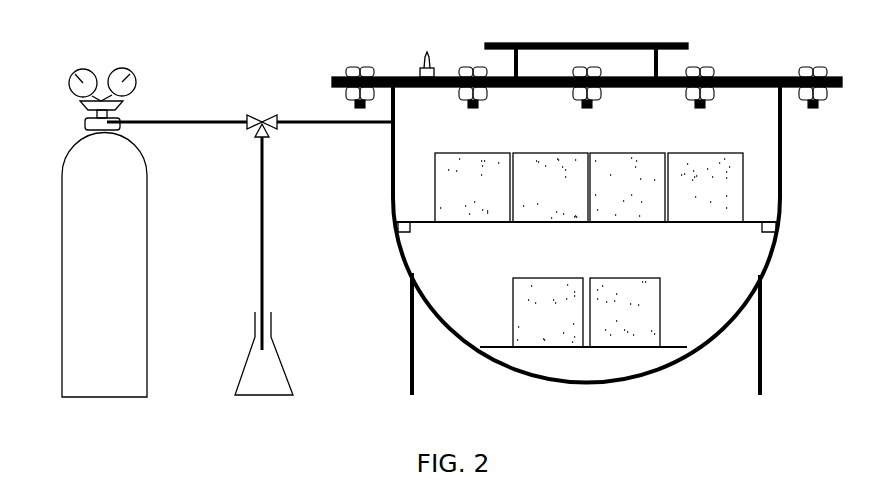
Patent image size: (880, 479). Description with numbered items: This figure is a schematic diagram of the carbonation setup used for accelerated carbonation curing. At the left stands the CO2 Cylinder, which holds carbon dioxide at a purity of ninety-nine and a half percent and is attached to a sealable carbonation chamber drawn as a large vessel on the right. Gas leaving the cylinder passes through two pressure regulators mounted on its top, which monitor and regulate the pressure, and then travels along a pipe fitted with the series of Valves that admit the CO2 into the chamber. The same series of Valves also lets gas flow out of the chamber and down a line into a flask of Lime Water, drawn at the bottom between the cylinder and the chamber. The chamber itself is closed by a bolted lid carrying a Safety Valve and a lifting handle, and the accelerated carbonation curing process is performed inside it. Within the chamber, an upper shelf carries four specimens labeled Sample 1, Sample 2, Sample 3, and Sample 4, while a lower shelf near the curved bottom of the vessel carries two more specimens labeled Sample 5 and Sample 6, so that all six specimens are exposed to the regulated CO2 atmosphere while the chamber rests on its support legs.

The CO2 cylinder CO2 Cylinder is at (104, 257).
The series of valves Valves is at (260, 114).
The limewater Lime Water is at (264, 353).
The safety valve Safety Valve is at (423, 54).
The sample 1 Sample 1 is at (472, 187).
The sample 2 Sample 2 is at (550, 187).
The sample 3 Sample 3 is at (627, 187).
The sample 4 Sample 4 is at (705, 187).
The sample 5 Sample 5 is at (548, 312).
The sample 6 Sample 6 is at (625, 312).